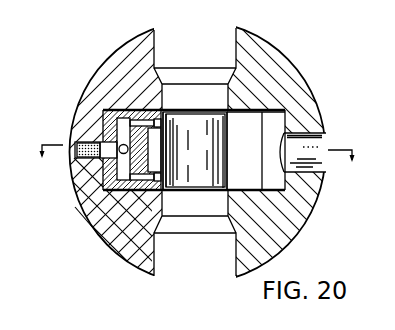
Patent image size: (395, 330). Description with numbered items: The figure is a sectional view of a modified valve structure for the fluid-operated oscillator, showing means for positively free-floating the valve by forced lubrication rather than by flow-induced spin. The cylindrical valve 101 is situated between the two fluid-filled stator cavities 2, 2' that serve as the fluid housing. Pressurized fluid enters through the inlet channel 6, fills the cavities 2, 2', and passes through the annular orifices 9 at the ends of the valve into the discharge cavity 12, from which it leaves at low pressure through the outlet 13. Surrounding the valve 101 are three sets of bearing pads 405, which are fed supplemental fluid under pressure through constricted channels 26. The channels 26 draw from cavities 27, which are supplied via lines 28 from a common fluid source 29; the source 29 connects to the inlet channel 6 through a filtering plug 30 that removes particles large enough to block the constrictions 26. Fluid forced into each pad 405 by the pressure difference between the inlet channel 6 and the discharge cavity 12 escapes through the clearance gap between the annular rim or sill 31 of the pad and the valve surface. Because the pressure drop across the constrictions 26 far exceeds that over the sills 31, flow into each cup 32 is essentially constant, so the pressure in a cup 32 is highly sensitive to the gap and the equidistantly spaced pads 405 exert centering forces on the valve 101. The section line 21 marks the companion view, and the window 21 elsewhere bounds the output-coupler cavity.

The stator cavity 2 is at (195, 68).
The stator cavity 2' is at (195, 235).
The inlet channel 6 is at (72, 131).
The annular orifice 9 is at (227, 113).
The discharge cavity 12 is at (256, 150).
The outlet 13 is at (303, 152).
The constricted channel 26 is at (128, 112).
The cavity 27 is at (95, 225).
The line 28 is at (117, 128).
The fluid source 29 is at (85, 227).
The filtering plug 30 is at (75, 178).
The annular rim or sill 31 is at (166, 116).
The cup 32 is at (162, 123).
The cylindrical valve 101 is at (207, 180).
The bearing pad 405 is at (153, 150).
The window 21 is at (189, 169).